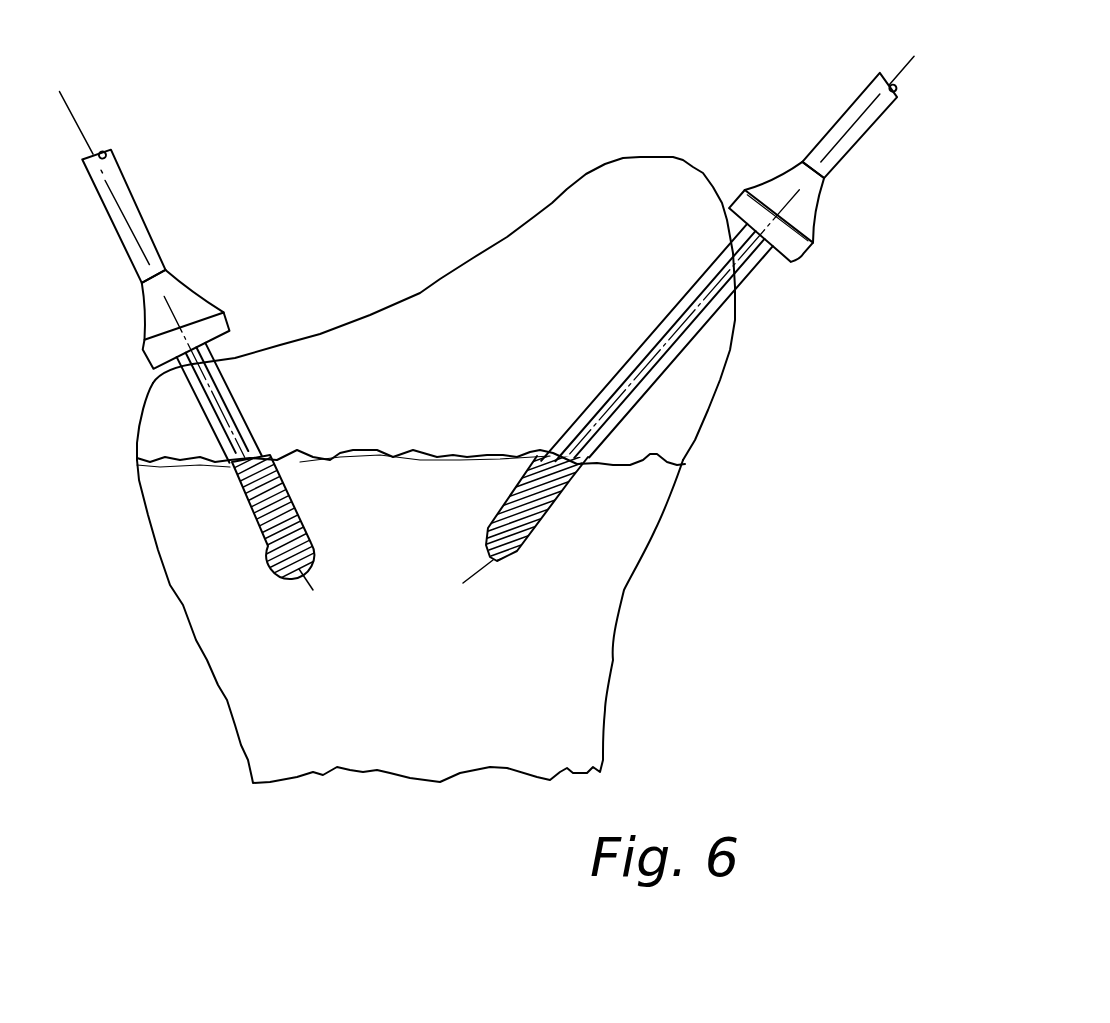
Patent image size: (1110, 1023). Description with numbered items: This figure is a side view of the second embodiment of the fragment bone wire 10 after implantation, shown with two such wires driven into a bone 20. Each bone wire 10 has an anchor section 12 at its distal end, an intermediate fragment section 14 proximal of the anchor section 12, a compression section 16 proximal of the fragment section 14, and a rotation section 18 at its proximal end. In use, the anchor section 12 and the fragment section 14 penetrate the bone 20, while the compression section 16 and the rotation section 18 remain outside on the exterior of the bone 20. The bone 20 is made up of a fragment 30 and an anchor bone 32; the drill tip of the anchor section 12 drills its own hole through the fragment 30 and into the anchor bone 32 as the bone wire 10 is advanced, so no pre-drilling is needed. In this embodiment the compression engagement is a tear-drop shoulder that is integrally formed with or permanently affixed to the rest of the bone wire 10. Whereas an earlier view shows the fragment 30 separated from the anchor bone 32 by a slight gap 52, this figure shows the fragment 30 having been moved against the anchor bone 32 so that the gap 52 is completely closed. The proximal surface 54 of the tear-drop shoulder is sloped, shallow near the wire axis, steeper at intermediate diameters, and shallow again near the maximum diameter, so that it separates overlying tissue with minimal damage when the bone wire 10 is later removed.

The fragment bone wire 10 is at (469, 303).
The anchor section 12 is at (262, 518).
The intermediate fragment section 14 is at (200, 405).
The compression section 16 is at (219, 320).
The rotation section 18 is at (127, 186).
The bone 20 is at (402, 470).
The fragment 30 is at (412, 316).
The anchor bone 32 is at (523, 597).
The gap 52 is at (644, 467).
The proximal surface 54 is at (775, 188).